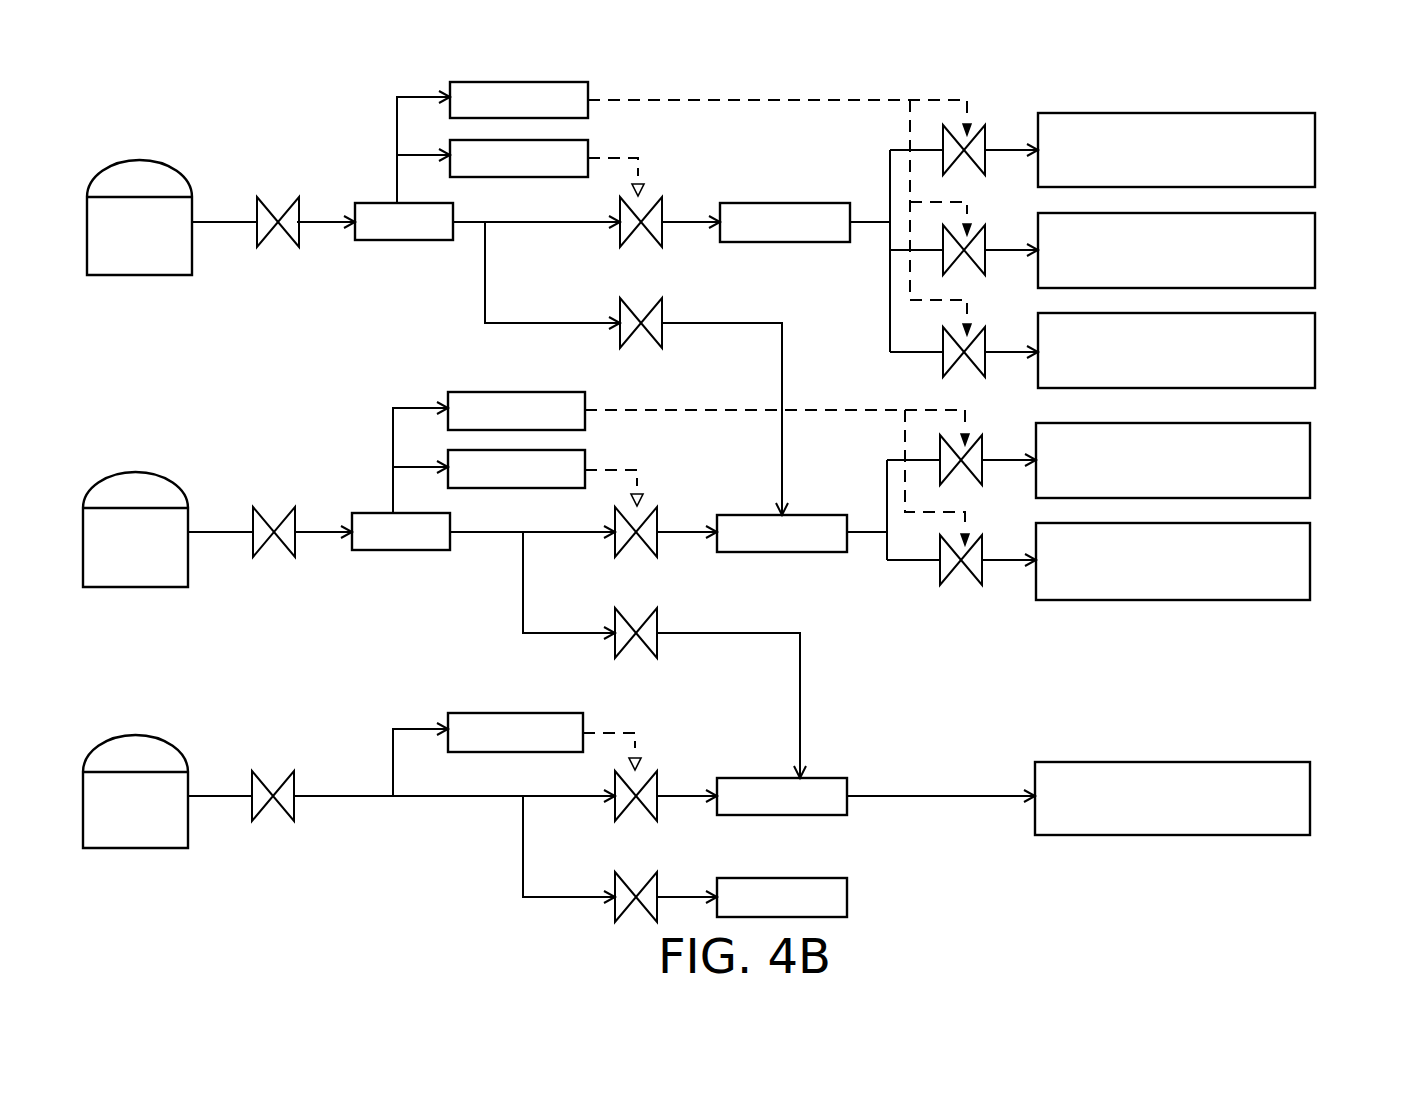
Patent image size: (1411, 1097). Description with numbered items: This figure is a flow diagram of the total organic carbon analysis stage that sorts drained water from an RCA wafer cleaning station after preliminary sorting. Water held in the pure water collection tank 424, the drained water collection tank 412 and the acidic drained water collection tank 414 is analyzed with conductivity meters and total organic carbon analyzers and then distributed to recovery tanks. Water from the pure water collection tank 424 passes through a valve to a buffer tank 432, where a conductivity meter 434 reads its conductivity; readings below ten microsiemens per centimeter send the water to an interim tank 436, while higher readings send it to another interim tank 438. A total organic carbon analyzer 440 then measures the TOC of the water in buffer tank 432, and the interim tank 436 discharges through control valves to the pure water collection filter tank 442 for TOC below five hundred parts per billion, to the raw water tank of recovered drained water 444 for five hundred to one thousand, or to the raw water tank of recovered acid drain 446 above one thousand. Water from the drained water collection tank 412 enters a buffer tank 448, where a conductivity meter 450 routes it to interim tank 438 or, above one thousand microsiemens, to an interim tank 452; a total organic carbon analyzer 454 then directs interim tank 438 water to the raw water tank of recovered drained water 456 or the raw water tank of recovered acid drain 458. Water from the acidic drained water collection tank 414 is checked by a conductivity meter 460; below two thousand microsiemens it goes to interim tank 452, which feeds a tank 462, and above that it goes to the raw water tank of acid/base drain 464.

The drained water collection tank 412 is at (135, 529).
The acidic drained water collection tank 414 is at (135, 791).
The pure water collection tank 424 is at (139, 217).
The buffer tank 432 is at (375, 240).
The conductivity meter 434 is at (588, 151).
The interim tank 436 is at (760, 203).
The interim tank 438 is at (757, 515).
The total organic carbon analyzer 440 is at (588, 91).
The pure water collection filter tank 442 is at (1315, 150).
The raw water tank of recovered drained water 444 is at (1315, 250).
The raw water tank of recovered acid drain 446 is at (1315, 352).
The buffer tank 448 is at (395, 550).
The conductivity meter 450 is at (585, 460).
The interim tank 452 is at (757, 778).
The total organic carbon analyzer 454 is at (545, 392).
The raw water tank of recovered drained water 456 is at (1310, 460).
The raw water tank of recovered acid drain 458 is at (1310, 560).
The conductivity meter 460 is at (517, 713).
The sixth process chamber 462 is at (1310, 798).
The raw water tank of acid/base drain 464 is at (847, 898).